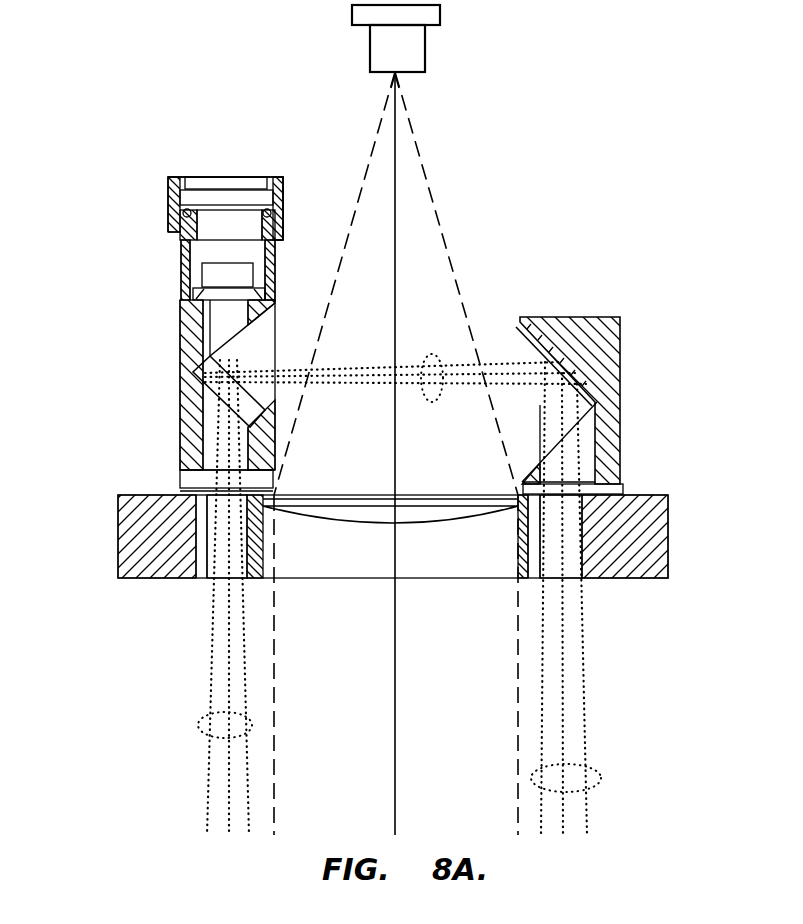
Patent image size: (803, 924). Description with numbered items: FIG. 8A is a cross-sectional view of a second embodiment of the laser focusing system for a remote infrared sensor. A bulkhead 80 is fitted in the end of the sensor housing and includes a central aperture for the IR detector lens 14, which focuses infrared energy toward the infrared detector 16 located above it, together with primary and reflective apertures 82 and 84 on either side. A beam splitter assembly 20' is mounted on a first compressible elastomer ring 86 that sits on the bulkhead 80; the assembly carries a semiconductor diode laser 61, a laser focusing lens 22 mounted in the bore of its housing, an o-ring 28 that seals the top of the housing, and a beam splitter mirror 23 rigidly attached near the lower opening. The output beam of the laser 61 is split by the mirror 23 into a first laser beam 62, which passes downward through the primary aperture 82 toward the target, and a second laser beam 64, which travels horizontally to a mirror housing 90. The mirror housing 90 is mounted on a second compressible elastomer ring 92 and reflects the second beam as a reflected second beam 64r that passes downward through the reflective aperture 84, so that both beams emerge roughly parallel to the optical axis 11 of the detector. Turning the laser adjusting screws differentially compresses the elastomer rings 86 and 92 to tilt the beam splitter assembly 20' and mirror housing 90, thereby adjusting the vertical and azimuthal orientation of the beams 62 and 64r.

The infrared detector 16 is at (425, 50).
The optical axis 11 is at (393, 772).
The bulkhead 80 is at (668, 495).
The primary aperture 82 is at (228, 560).
The reflective aperture 84 is at (565, 560).
The detector lens 14 is at (385, 525).
The semiconductor diode laser 61 is at (207, 178).
The o-ring 28 is at (283, 205).
The laser focusing lens 22 is at (197, 278).
The beam splitter mirror 23 is at (193, 372).
The first compressible elastomer ring 86 is at (182, 478).
The mirror housing 90 is at (622, 330).
The second compressible elastomer ring 92 is at (622, 482).
The second laser beam 64 is at (433, 356).
The first laser beam 62 is at (200, 727).
The reflected second beam 64r is at (601, 778).
The beam splitter assembly 20' is at (72, 351).